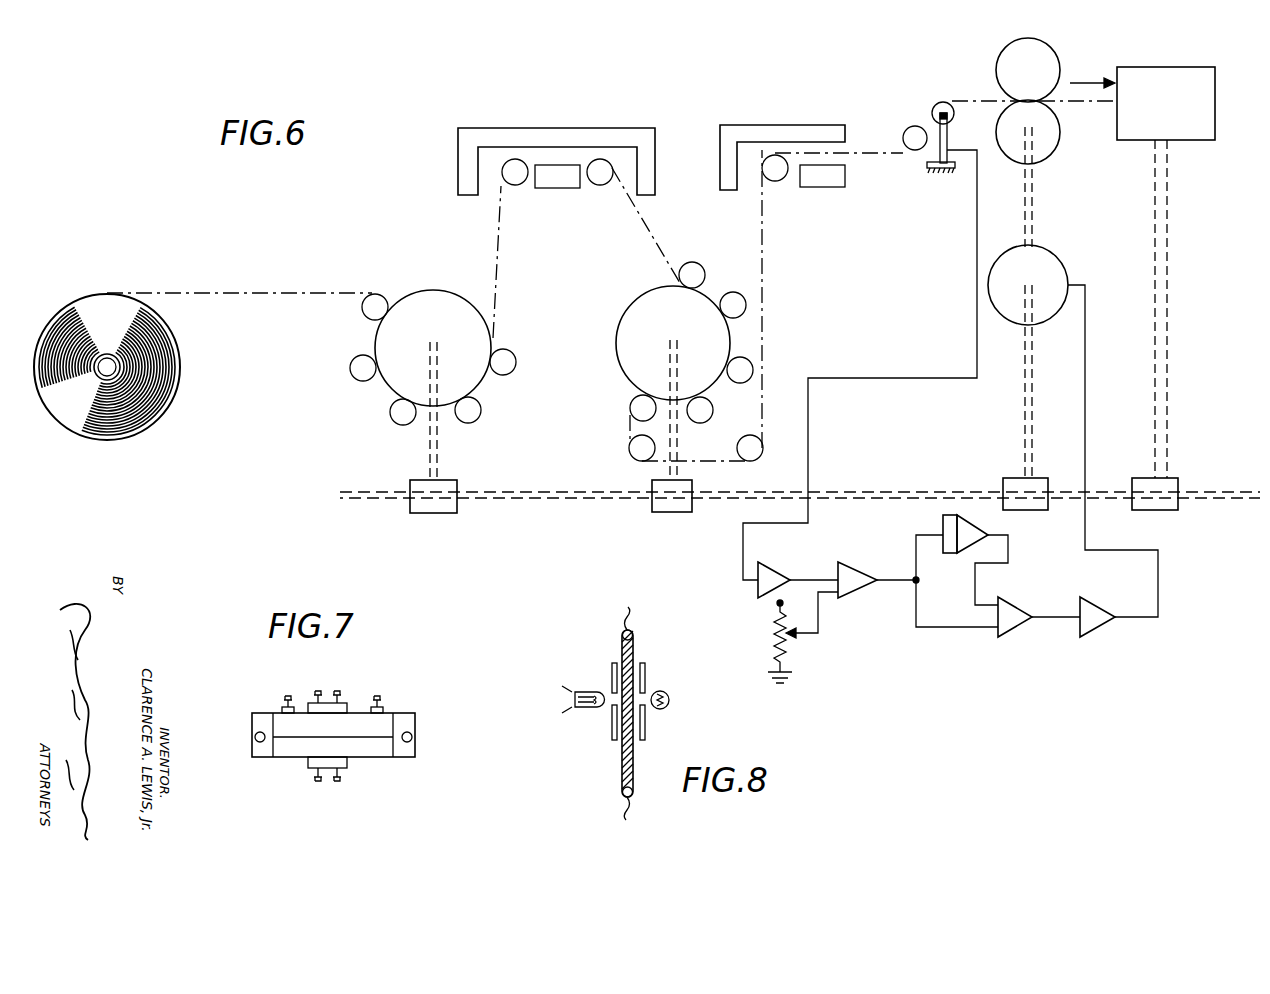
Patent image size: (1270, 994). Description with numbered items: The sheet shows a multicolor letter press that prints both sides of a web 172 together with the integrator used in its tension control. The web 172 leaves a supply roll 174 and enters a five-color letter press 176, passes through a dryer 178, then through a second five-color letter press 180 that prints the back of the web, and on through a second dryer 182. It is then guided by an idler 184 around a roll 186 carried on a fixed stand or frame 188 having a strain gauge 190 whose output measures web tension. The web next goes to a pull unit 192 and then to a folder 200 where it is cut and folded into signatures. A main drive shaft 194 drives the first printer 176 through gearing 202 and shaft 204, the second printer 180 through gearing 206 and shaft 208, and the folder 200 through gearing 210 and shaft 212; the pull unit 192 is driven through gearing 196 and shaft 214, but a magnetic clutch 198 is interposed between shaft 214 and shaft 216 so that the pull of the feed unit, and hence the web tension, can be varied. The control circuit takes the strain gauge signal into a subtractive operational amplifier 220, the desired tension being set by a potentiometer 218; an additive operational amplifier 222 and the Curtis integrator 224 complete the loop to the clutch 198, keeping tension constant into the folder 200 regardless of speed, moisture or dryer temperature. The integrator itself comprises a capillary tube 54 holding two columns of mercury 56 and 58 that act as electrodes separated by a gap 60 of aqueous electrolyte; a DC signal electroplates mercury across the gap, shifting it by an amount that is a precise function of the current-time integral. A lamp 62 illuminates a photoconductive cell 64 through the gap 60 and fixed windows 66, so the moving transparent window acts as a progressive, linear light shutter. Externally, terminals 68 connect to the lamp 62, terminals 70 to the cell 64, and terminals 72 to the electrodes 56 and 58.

In FIG. 8, the capillary tube 54 is at (631, 637).
In FIG. 8, the mercury column electrode 56 is at (640, 669).
In FIG. 8, the mercury column electrode 58 is at (634, 757).
In FIG. 8, the gap 60 is at (629, 697).
In FIG. 8, the lamp 62 is at (589, 710).
In FIG. 8, the photoconductive cell 64 is at (670, 700).
In FIG. 8, the fixed windows 66 is at (644, 706).
In FIG. 7, the terminals 68 is at (325, 792).
In FIG. 7, the terminals 70 is at (325, 701).
In FIG. 7, the terminals 72 is at (288, 694).
In FIG. 6, the web 172 is at (297, 293).
In FIG. 6, the supply roll 174 is at (180, 391).
In FIG. 6, the five-color letter press 176 is at (435, 292).
In FIG. 6, the dryer 178 is at (582, 132).
In FIG. 6, the second five-color letter press 180 is at (617, 343).
In FIG. 6, the second dryer 182 is at (797, 130).
In FIG. 6, the idler 184 is at (908, 130).
In FIG. 6, the roll 186 is at (954, 116).
In FIG. 6, the fixed stand or frame 188 is at (949, 133).
In FIG. 6, the strain gauge 190 is at (960, 168).
In FIG. 6, the pull unit 192 is at (1062, 56).
In FIG. 6, the main drive shaft 194 is at (909, 491).
In FIG. 6, the gearing 196 is at (1031, 511).
In FIG. 6, the magnetic clutch 198 is at (1060, 271).
In FIG. 6, the folder 200 is at (1217, 110).
In FIG. 6, the gearing 202 is at (436, 514).
In FIG. 6, the shaft 204 is at (438, 446).
In FIG. 6, the gearing 206 is at (671, 513).
In FIG. 6, the shaft 208 is at (678, 446).
In FIG. 6, the gearing 210 is at (1161, 511).
In FIG. 6, the shaft 212 is at (1168, 405).
In FIG. 6, the shaft 214 is at (1034, 428).
In FIG. 6, the shaft 216 is at (1034, 226).
In FIG. 6, the potentiometer 218 is at (777, 640).
In FIG. 6, the operational amplifier 220 is at (851, 572).
In FIG. 6, the operational amplifier 222 is at (1013, 603).
In FIG. 6, the Curtis integrator 224 is at (967, 531).